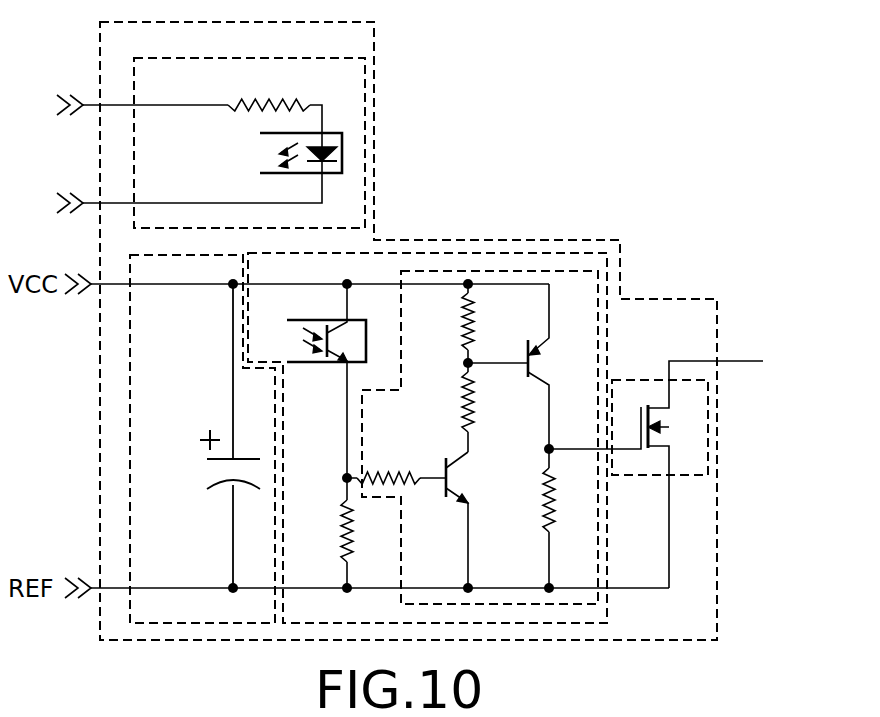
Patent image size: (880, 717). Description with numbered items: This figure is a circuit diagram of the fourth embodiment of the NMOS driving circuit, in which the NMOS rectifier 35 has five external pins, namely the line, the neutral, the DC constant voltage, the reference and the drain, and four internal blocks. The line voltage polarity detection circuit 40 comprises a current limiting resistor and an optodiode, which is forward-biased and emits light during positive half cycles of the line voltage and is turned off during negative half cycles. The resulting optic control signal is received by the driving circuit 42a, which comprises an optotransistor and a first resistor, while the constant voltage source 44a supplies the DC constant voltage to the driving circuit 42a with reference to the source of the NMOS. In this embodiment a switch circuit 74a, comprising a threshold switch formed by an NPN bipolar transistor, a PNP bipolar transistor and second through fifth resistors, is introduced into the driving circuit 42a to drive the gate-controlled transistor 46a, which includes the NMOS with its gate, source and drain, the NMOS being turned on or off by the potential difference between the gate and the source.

The NMOS rectifier 35 is at (380, 240).
The line voltage polarity detection circuit 40 is at (366, 165).
The driving circuit 42a is at (445, 253).
The constant voltage source 44a is at (130, 395).
The gate-controlled transistor 46a is at (708, 458).
The switch circuit 74a is at (592, 268).